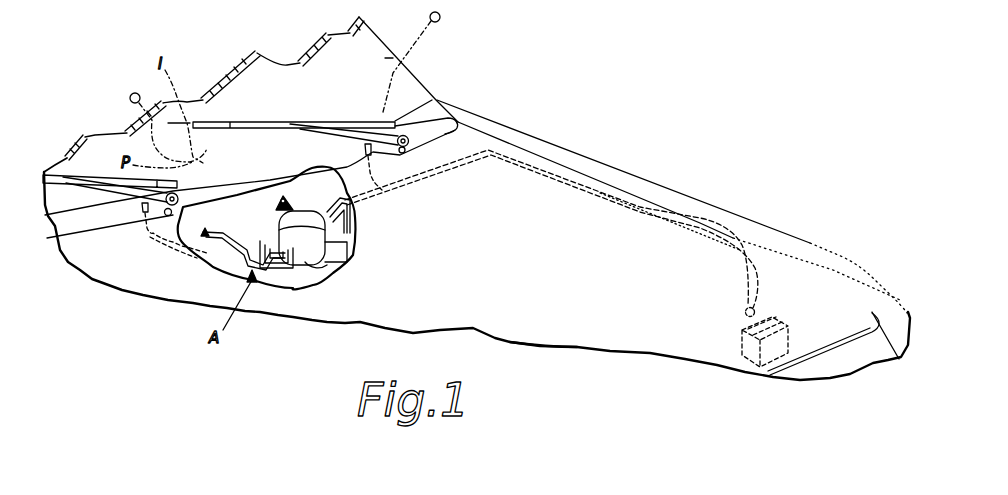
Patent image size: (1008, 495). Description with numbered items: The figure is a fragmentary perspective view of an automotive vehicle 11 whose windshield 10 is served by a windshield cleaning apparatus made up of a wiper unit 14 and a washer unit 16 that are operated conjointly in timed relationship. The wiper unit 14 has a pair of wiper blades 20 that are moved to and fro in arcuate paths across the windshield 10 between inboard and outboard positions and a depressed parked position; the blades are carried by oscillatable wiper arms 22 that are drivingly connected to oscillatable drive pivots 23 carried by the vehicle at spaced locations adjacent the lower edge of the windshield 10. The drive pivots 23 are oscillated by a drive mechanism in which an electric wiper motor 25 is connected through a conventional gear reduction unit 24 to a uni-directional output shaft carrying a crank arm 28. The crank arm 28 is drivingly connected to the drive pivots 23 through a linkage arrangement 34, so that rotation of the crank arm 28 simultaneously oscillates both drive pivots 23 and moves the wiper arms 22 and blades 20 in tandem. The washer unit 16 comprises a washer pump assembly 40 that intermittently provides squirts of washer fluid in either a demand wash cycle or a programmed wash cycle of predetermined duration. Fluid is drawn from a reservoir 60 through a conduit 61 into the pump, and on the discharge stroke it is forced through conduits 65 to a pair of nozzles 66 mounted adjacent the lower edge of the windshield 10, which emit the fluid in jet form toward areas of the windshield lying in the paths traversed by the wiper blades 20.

The windshield 10 is at (393, 73).
The automotive vehicle 11 is at (577, 337).
The wiper unit 14 is at (328, 267).
The washer unit 16 is at (326, 232).
The wiper blades 20 is at (48, 175).
The wiper arms 22 is at (340, 128).
The drive pivots 23 is at (407, 147).
The gear reduction unit 24 is at (271, 228).
The electric wiper motor 25 is at (320, 260).
The crank arm 28 is at (287, 197).
The linkage arrangement 34 is at (205, 232).
The washer pump assembly 40 is at (300, 262).
The reservoir 60 is at (733, 327).
The conduit 61 is at (703, 227).
The conduits 65 is at (350, 210).
The nozzles 66 is at (368, 150).